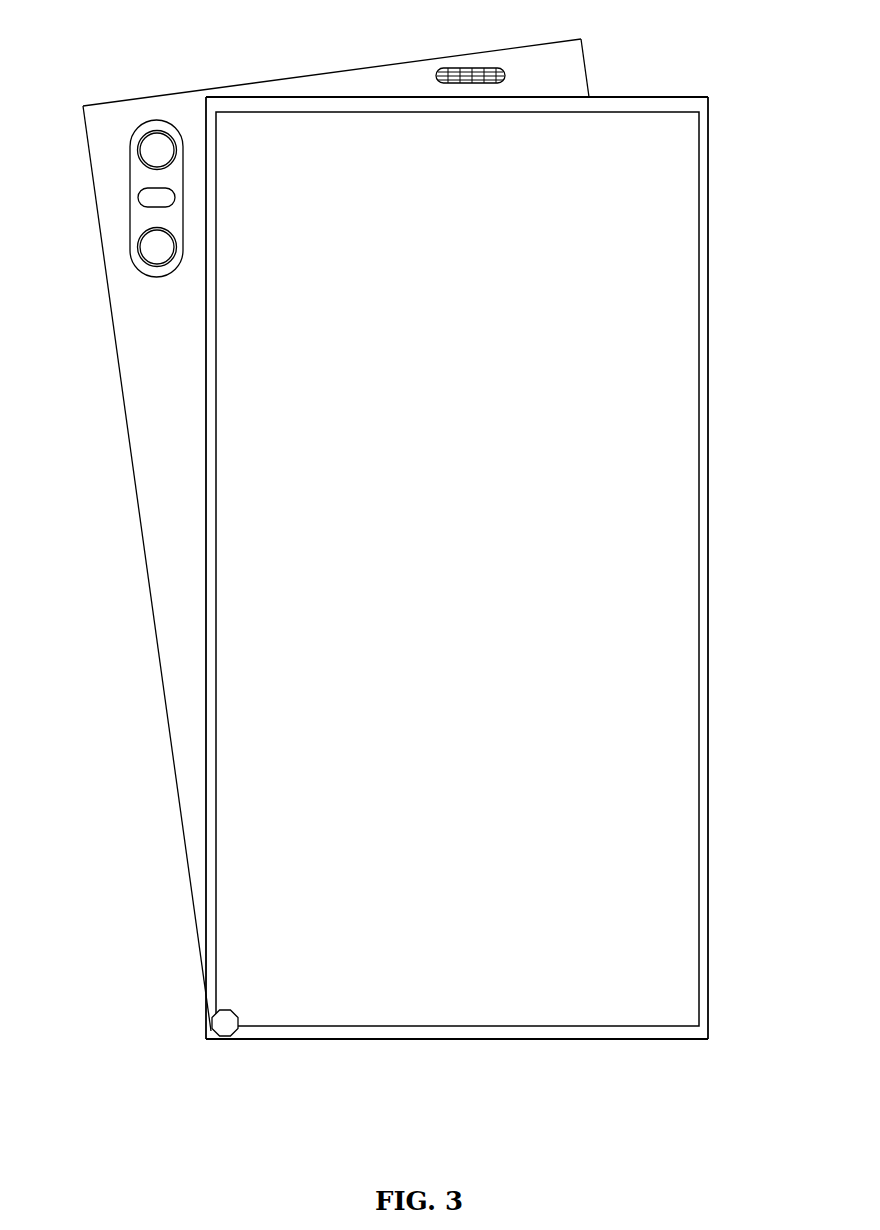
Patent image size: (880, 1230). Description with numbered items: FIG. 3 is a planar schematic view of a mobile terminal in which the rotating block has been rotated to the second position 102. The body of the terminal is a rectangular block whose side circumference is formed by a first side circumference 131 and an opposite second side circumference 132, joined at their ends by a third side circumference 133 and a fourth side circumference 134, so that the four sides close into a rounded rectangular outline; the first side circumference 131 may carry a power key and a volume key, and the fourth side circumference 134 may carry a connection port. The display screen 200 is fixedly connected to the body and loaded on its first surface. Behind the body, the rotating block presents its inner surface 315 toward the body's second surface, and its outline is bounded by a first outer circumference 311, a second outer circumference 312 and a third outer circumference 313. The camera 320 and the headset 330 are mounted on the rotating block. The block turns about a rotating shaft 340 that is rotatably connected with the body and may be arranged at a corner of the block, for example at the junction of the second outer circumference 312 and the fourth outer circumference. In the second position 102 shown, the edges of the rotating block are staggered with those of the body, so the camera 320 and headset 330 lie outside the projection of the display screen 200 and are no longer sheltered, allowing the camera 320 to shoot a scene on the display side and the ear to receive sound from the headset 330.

The second position 102 is at (101, 314).
The first side circumference 131 is at (709, 687).
The second side circumference 132 is at (207, 720).
The third side circumference 133 is at (655, 96).
The fourth side circumference 134 is at (412, 1039).
The display screen 200 is at (672, 487).
The first outer circumference 311 is at (586, 62).
The second outer circumference 312 is at (137, 512).
The third outer circumference 313 is at (323, 71).
The inner surface 315 is at (178, 629).
The camera 320 is at (143, 248).
The headset 330 is at (481, 68).
The rotating shaft 340 is at (220, 1022).